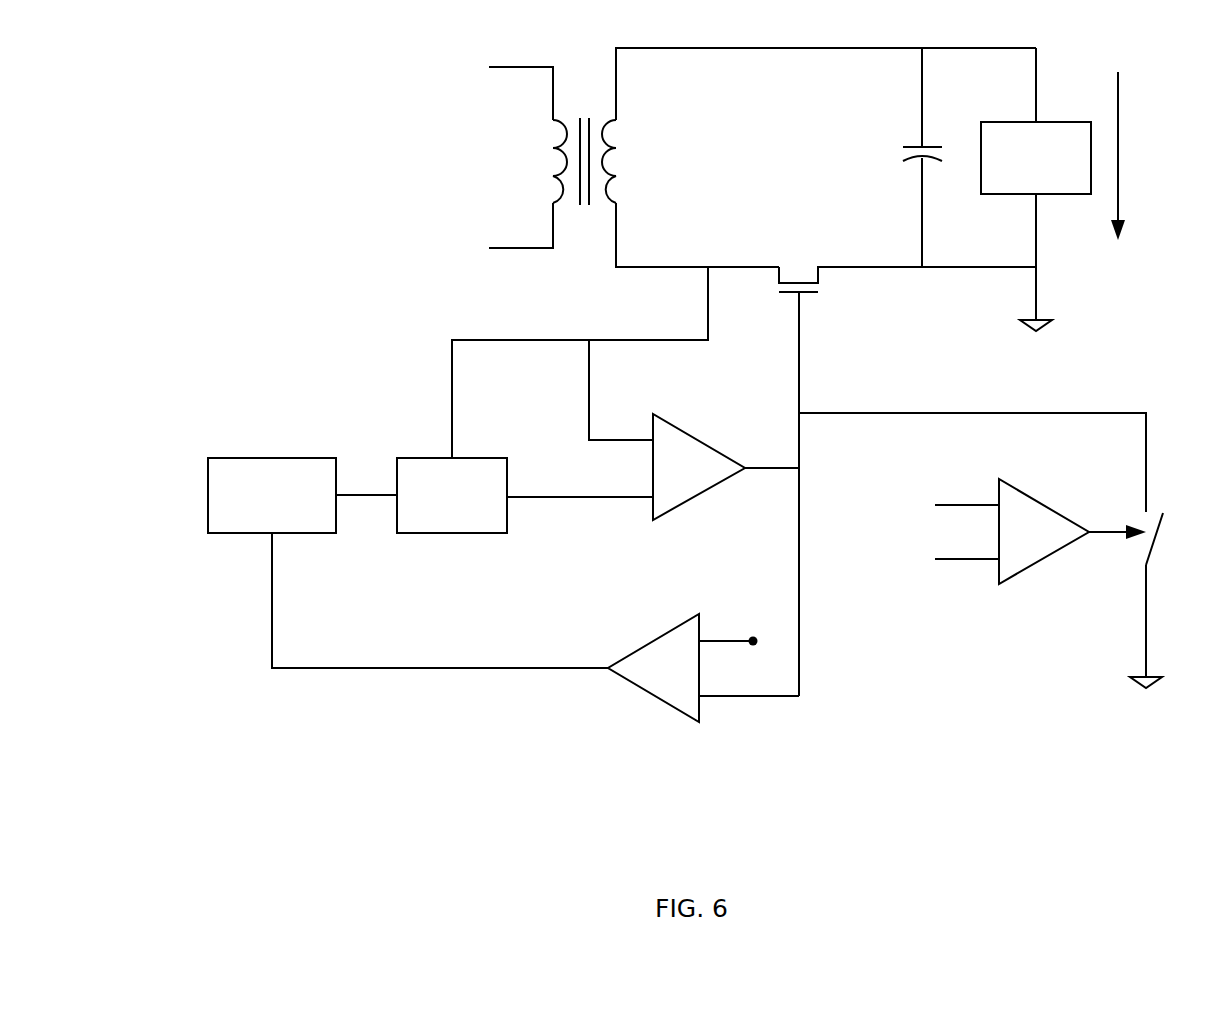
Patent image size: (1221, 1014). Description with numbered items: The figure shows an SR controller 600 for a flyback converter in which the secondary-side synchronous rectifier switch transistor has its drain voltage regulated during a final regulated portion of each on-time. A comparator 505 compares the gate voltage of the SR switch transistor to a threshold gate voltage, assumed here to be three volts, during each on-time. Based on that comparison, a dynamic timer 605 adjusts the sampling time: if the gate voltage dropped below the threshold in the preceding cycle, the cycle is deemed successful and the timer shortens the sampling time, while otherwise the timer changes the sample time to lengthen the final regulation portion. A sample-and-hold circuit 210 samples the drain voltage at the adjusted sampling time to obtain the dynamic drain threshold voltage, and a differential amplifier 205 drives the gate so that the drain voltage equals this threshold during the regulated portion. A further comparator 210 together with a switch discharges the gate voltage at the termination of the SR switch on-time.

The SR controller 600 is at (399, 303).
The dynamic timer 605 is at (207, 519).
The sample-and-hold circuit 210 is at (493, 535).
The differential amplifier 205 is at (708, 494).
The comparator 505 is at (647, 693).